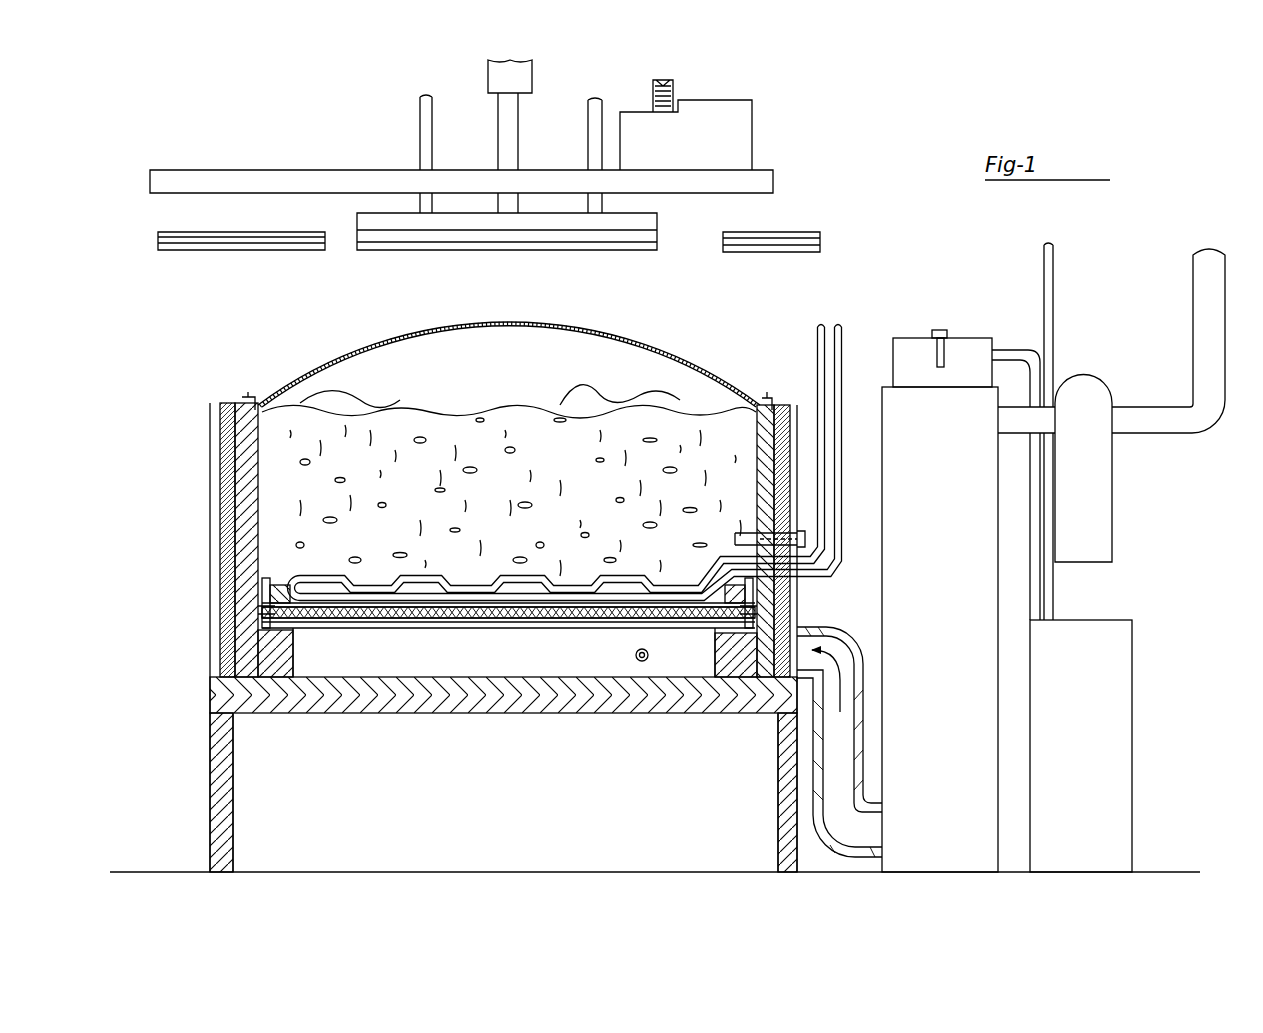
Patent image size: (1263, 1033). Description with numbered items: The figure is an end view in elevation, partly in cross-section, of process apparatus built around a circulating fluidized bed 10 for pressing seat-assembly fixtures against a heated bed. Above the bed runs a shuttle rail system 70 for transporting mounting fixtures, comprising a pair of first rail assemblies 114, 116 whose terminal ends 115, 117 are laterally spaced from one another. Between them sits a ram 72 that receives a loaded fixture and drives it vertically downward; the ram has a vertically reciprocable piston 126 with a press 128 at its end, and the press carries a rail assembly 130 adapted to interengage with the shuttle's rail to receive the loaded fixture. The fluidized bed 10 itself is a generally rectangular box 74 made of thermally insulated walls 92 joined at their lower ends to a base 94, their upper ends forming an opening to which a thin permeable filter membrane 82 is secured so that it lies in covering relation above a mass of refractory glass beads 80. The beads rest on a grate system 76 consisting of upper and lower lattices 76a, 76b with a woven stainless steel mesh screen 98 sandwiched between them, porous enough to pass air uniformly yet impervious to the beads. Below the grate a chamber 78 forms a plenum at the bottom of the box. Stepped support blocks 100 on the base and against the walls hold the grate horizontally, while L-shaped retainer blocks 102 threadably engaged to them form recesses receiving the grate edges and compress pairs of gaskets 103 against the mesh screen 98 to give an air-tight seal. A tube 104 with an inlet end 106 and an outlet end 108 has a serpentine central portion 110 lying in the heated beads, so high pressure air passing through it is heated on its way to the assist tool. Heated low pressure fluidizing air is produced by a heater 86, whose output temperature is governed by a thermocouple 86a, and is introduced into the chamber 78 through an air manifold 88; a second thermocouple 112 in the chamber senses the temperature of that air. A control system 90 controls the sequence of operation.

The circulating fluidized bed 10 is at (207, 428).
The shuttle rail system 70 is at (255, 165).
The ram 72 is at (484, 76).
The box 74 is at (232, 458).
The grate system 76 is at (330, 633).
The upper lattice 76a is at (478, 625).
The lower lattice 76b is at (436, 622).
The chamber 78 is at (385, 652).
The refractory glass beads 80 is at (317, 452).
The membrane 82 is at (303, 371).
The heater 86 is at (950, 746).
The thermocouple 86a is at (942, 354).
The air manifold 88 is at (828, 628).
The control system 90 is at (1102, 746).
The walls 92 is at (245, 508).
The base 94 is at (270, 686).
The mesh screen 98 is at (543, 620).
The stepped support blocks 100 is at (273, 655).
The retainer blocks 102 is at (259, 588).
The gaskets 103 is at (259, 610).
The tube 104 is at (288, 574).
The inlet end 106 is at (844, 406).
The outlet end 108 is at (814, 400).
The serpentine central portion 110 is at (603, 598).
The thermocouple 112 is at (648, 661).
The first rail assembly 114 is at (245, 252).
The terminal end 115 is at (326, 243).
The first rail assembly 116 is at (780, 254).
The terminal end 117 is at (722, 240).
The piston 126 is at (507, 123).
The press 128 is at (517, 221).
The rail assembly 130 is at (460, 243).